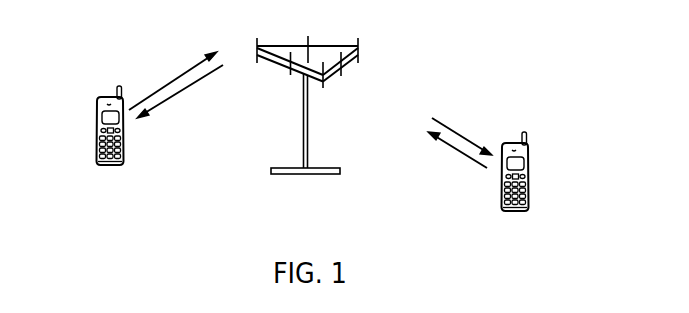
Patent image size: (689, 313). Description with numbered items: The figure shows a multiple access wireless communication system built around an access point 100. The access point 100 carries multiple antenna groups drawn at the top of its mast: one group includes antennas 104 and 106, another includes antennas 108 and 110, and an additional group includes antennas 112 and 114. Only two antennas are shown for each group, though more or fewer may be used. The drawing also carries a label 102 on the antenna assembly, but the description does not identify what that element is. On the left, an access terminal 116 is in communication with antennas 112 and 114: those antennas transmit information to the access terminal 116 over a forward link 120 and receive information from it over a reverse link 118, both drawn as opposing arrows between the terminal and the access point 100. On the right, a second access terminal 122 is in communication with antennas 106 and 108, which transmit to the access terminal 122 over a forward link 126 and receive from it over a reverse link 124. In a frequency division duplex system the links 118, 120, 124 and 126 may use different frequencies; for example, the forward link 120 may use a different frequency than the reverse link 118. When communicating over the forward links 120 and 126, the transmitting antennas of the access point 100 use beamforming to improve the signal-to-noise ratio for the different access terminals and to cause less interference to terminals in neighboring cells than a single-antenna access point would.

The access point 100 is at (310, 108).
The antenna array 102 is at (307, 64).
The antenna 104 is at (324, 84).
The antenna 106 is at (343, 71).
The antenna 108 is at (360, 60).
The antenna 110 is at (310, 36).
The antenna 112 is at (256, 43).
The antenna 114 is at (290, 74).
The access terminal 116 is at (97, 112).
The reverse link 118 is at (180, 74).
The forward link 120 is at (165, 101).
The access terminal 122 is at (529, 161).
The reverse link 124 is at (463, 155).
The forward link 126 is at (458, 133).